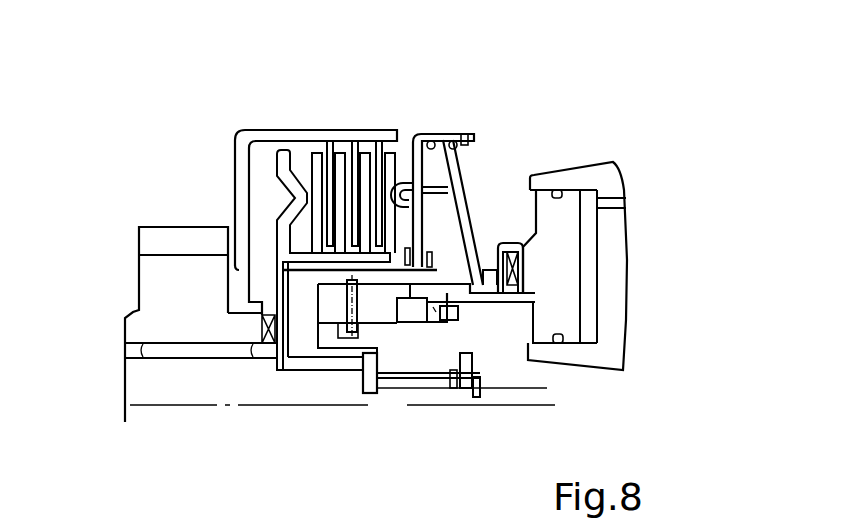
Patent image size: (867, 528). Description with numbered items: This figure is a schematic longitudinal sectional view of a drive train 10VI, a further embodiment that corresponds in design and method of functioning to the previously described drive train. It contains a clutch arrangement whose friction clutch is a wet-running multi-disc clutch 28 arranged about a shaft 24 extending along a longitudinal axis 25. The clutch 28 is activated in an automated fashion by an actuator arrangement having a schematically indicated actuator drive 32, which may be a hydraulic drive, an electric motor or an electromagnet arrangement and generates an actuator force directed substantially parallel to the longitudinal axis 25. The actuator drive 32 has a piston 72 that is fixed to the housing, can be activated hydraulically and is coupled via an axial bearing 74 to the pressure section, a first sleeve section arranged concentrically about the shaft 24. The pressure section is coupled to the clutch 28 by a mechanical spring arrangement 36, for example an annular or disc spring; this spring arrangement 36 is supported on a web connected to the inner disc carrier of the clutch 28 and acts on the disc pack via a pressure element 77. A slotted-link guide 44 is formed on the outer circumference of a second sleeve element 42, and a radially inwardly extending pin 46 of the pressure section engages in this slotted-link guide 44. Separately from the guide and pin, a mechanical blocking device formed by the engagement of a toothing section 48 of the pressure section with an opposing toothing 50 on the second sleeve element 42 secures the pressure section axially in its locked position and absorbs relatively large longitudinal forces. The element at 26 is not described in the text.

The drive train 10VI is at (640, 167).
The shaft 24 is at (142, 382).
The longitudinal axis 25 is at (512, 408).
The clutch housing 26 is at (162, 298).
The wet-running multi-disc clutch 28 is at (333, 187).
The actuator drive 32 is at (588, 158).
The spring arrangement 36 is at (460, 212).
The second sleeve element 42 is at (420, 357).
The slotted-link guide 44 is at (381, 328).
The pin 46 is at (347, 297).
The toothing section 48 is at (437, 320).
The opposing toothing 50 is at (465, 310).
The piston 72 is at (563, 257).
The axial bearing 74 is at (523, 277).
The pressure element 77 is at (403, 182).